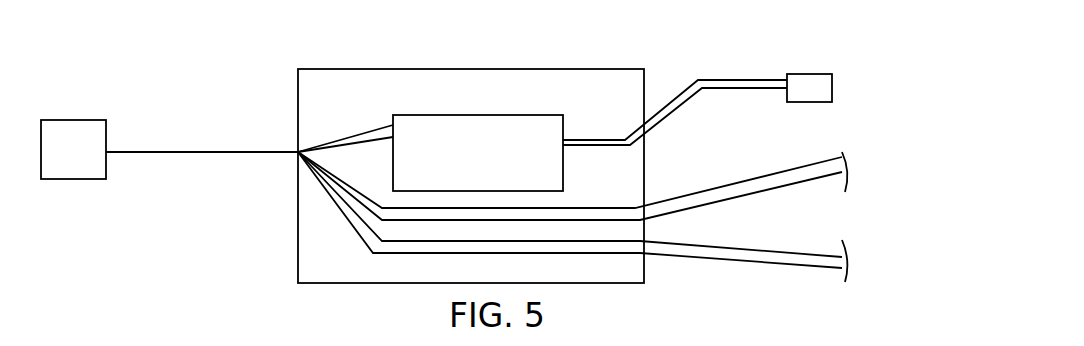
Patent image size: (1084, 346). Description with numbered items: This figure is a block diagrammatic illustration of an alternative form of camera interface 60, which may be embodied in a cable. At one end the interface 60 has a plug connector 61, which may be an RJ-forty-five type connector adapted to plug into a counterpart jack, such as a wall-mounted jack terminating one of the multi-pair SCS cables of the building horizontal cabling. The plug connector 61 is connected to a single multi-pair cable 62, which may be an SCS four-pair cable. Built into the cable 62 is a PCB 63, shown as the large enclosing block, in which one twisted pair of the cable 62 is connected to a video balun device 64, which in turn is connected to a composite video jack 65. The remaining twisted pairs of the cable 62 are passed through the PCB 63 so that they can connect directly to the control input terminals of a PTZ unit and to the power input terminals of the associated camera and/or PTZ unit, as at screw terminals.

The camera interface 60 is at (572, 143).
The plug connector 61 is at (82, 120).
The multi-pair cable 62 is at (222, 151).
The PCB 63 is at (390, 68).
The video balun device 64 is at (540, 114).
The composite video jack 65 is at (809, 74).